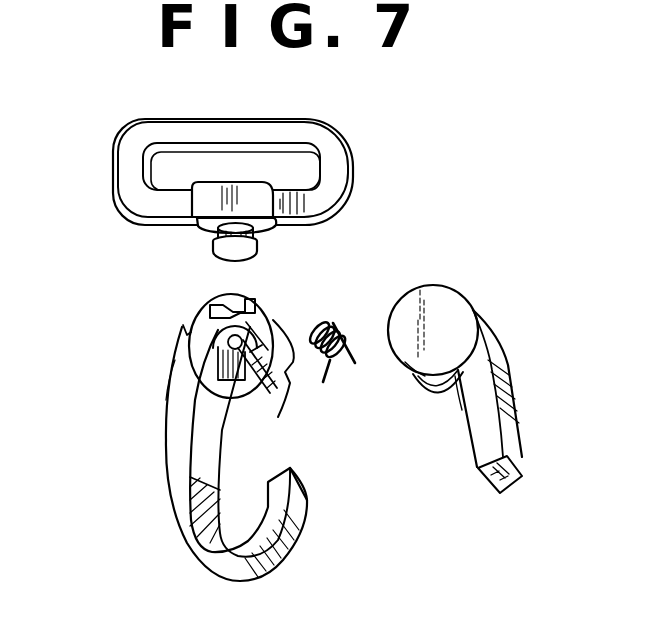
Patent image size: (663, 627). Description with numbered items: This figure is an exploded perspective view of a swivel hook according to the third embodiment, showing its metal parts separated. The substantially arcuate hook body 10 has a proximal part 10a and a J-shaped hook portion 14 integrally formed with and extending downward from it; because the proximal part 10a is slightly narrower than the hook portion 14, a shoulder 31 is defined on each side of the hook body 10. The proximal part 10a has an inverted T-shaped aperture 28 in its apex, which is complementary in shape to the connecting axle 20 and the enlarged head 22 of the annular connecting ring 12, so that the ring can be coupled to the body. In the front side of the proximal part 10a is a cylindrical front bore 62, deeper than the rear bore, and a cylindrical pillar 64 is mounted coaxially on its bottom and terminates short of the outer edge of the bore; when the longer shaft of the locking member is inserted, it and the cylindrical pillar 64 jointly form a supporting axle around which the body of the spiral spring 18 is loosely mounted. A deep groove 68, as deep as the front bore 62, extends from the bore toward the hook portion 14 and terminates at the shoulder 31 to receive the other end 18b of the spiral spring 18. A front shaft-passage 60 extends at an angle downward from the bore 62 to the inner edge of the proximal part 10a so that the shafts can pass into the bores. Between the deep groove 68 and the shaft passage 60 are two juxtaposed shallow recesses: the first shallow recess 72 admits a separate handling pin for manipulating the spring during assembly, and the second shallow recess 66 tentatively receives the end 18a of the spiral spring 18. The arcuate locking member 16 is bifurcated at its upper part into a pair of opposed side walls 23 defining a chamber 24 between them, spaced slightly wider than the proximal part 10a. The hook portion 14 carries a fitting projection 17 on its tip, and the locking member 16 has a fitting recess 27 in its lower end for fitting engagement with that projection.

The hook body 10 is at (160, 392).
The proximal part 10a is at (188, 326).
The connecting ring 12 is at (334, 113).
The J-shaped hook portion 14 is at (198, 540).
The locking member 16 is at (512, 370).
The fitting projection 17 is at (289, 468).
The spiral spring 18 is at (325, 318).
The end of the spiral spring 18a is at (353, 345).
The other end of the spiral spring 18b is at (330, 372).
The connecting axle 20 is at (200, 229).
The enlarged head 22 is at (222, 251).
The side walls 23 is at (397, 357).
The chamber 24 is at (440, 390).
The fitting recess 27 is at (505, 465).
The inverted T-shaped aperture 28 is at (216, 302).
The shoulder 31 is at (167, 401).
The shaft-passage 60 is at (278, 405).
The front bore 62 is at (262, 349).
The cylindrical pillar 64 is at (236, 340).
The second shallow recess 66 is at (190, 443).
The deep groove 68 is at (220, 360).
The first shallow recess 72 is at (233, 372).